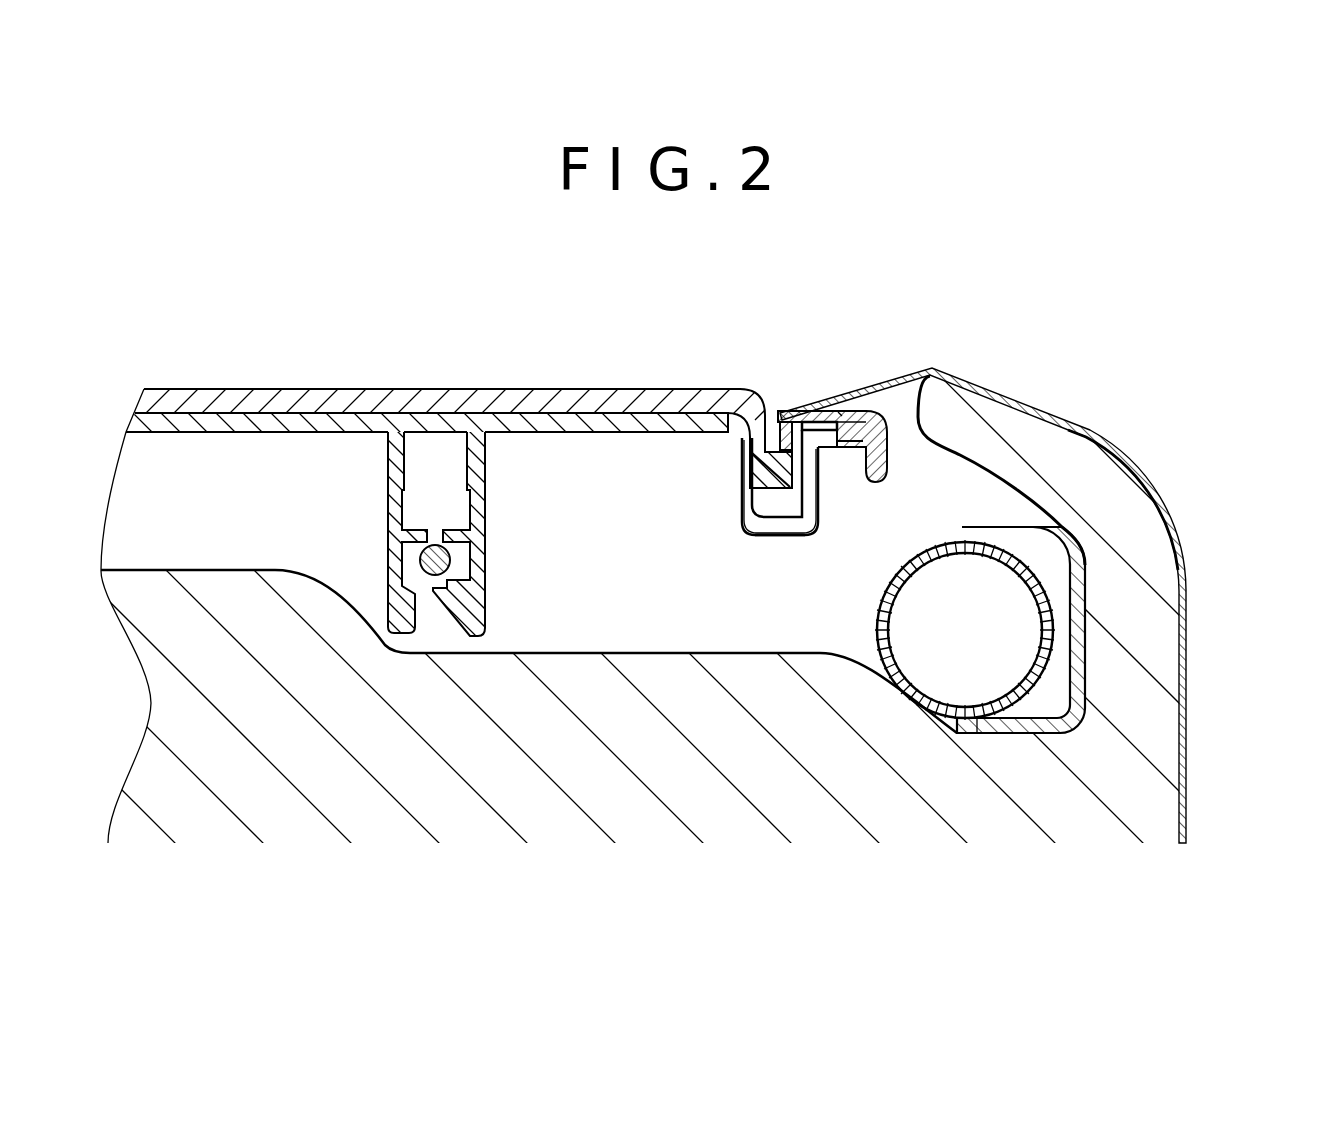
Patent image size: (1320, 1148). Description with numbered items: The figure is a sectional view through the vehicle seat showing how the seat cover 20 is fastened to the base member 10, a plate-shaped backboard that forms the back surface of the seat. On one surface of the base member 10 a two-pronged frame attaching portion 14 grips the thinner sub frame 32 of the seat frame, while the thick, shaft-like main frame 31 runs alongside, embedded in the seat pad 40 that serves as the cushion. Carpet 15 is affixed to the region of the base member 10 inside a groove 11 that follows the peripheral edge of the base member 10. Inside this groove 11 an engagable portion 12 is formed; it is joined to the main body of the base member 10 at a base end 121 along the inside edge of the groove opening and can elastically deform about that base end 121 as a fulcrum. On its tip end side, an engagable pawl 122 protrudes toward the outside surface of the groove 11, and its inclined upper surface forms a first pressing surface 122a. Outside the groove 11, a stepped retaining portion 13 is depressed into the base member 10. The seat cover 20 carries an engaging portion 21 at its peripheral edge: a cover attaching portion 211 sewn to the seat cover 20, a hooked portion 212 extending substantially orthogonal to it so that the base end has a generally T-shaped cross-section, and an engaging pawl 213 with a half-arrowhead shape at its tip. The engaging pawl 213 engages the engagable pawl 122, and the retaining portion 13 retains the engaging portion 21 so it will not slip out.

The base member 10 is at (255, 445).
The groove 11 is at (757, 508).
The engagable portion 12 is at (747, 490).
The base end 121 is at (733, 436).
The engagable pawl 122 is at (753, 477).
The first pressing surface 122a is at (806, 462).
The retaining portion 13 is at (840, 411).
The two-pronged frame attaching portion 14 is at (485, 462).
The carpet 15 is at (400, 388).
The seat cover 20 is at (1082, 422).
The engaging portion 21 is at (806, 410).
The cover attaching portion 211 is at (789, 412).
The hooked portion 212 is at (815, 414).
The engaging pawl 213 is at (780, 520).
The main frame 31 is at (1047, 592).
The sub frame 32 is at (449, 552).
The seat pad 40 is at (1155, 726).